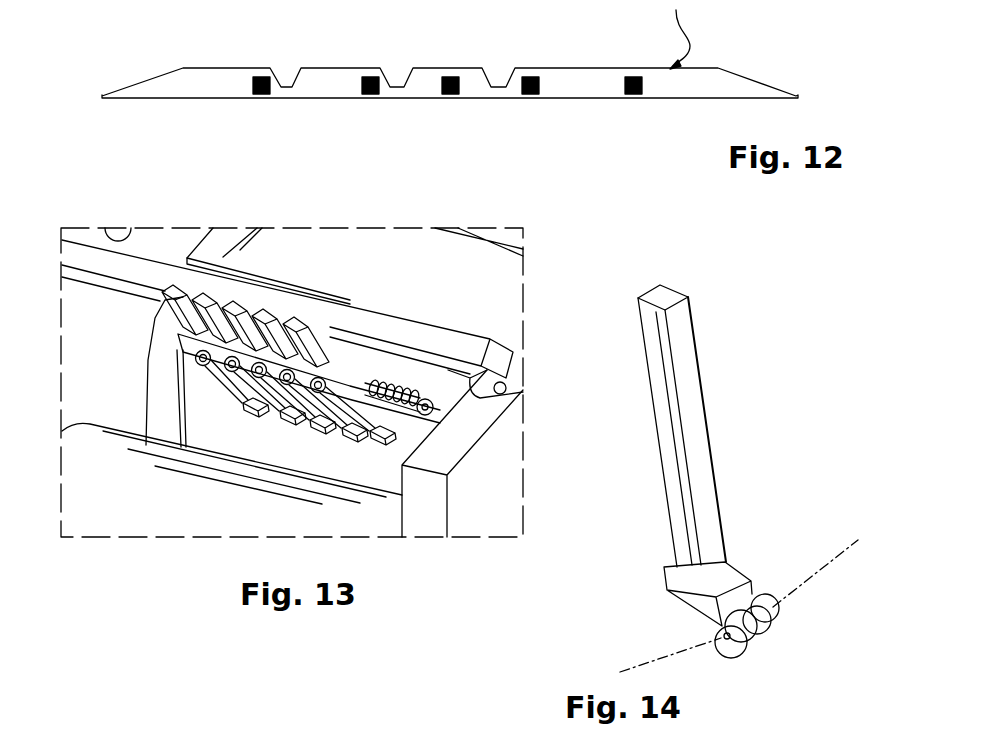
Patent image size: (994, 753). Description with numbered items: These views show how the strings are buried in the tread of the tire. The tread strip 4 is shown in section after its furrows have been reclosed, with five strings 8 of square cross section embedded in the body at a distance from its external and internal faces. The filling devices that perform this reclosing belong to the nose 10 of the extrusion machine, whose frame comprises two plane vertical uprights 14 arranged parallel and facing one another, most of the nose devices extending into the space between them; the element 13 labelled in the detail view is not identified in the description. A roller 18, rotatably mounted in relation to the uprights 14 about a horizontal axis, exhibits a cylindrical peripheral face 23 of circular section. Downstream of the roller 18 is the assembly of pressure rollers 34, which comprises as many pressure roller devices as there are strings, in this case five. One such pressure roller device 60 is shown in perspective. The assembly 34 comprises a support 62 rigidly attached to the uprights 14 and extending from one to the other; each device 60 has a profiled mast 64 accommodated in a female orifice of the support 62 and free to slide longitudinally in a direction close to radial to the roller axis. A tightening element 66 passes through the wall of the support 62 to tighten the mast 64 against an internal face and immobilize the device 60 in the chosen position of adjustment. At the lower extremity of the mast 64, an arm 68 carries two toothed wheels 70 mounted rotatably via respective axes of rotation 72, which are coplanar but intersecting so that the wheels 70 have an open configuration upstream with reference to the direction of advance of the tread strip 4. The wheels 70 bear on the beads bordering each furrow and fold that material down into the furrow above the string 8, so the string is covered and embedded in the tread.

In FIG. 12, the tread strip 4 is at (755, 64).
In FIG. 12, the strings 8 is at (258, 77).
In FIG. 13, the nose of the extrusion machine 10 is at (462, 218).
In FIG. 13, the lower tooth row 13 is at (295, 423).
In FIG. 13, the vertical uprights 14 is at (478, 505).
In FIG. 13, the roller 18 is at (355, 248).
In FIG. 13, the cylindrical peripheral face 23 is at (288, 234).
In FIG. 13, the assembly of pressure rollers 34 is at (350, 318).
In FIG. 13, the pressure roller device 60 is at (273, 312).
In FIG. 14, the pressure roller device 60 is at (739, 457).
In FIG. 13, the support 62 is at (367, 360).
In FIG. 14, the mast 64 is at (680, 362).
In FIG. 13, the tightening element 66 is at (196, 360).
In FIG. 14, the arm 68 is at (733, 577).
In FIG. 13, the toothed wheels 70 is at (433, 408).
In FIG. 14, the toothed wheels 70 is at (779, 622).
In FIG. 14, the axes of rotation 72 is at (658, 660).